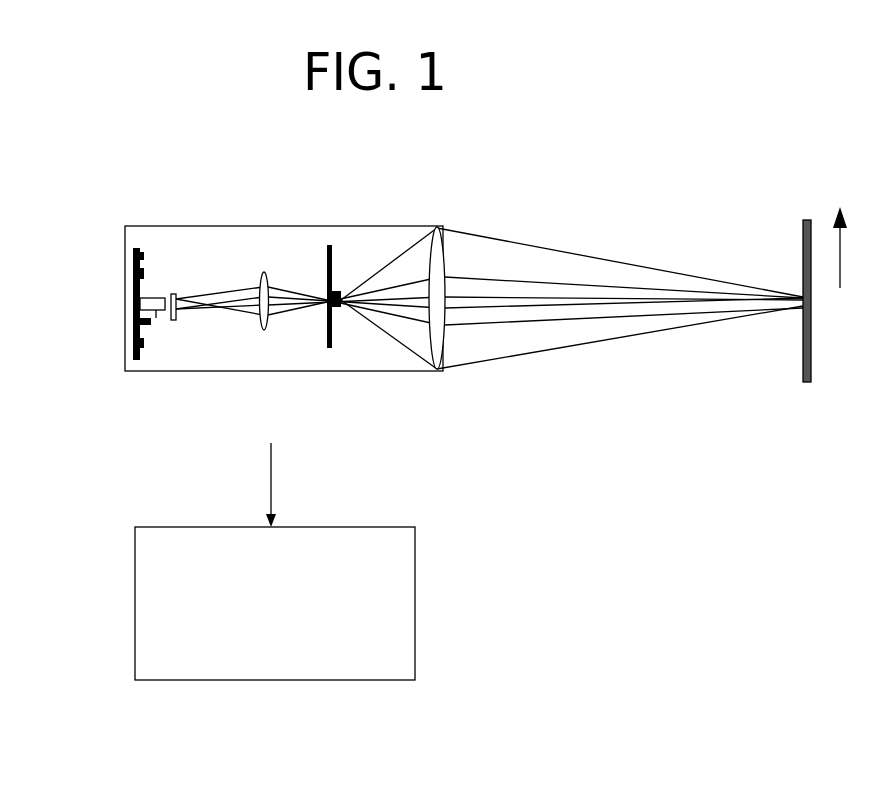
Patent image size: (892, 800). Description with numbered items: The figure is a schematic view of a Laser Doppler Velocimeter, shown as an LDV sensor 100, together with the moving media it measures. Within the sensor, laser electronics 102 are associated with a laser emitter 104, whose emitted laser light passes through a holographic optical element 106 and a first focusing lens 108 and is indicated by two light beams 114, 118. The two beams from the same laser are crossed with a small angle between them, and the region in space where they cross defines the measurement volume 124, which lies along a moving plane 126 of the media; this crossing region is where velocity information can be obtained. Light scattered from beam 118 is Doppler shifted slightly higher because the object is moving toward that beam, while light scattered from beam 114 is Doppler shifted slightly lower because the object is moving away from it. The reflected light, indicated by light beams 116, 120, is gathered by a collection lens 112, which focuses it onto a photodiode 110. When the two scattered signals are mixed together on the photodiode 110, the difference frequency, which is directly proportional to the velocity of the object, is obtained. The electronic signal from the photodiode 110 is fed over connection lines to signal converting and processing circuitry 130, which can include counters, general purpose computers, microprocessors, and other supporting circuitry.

The LDV sensor 100 is at (565, 116).
The laser electronics 102 is at (132, 345).
The laser emitter 104 is at (152, 330).
The holographic optical element 106 is at (190, 293).
The first focusing lens 108 is at (272, 280).
The photodiode 110 is at (343, 284).
The collection lens 112 is at (440, 247).
The light beam 114 is at (250, 283).
The light beam 116 is at (438, 226).
The light beam 118 is at (270, 317).
The light beam 120 is at (403, 338).
The measurement volume 124 is at (777, 295).
The moving plane 126 is at (800, 230).
The signal converting and processing circuitry 130 is at (387, 657).